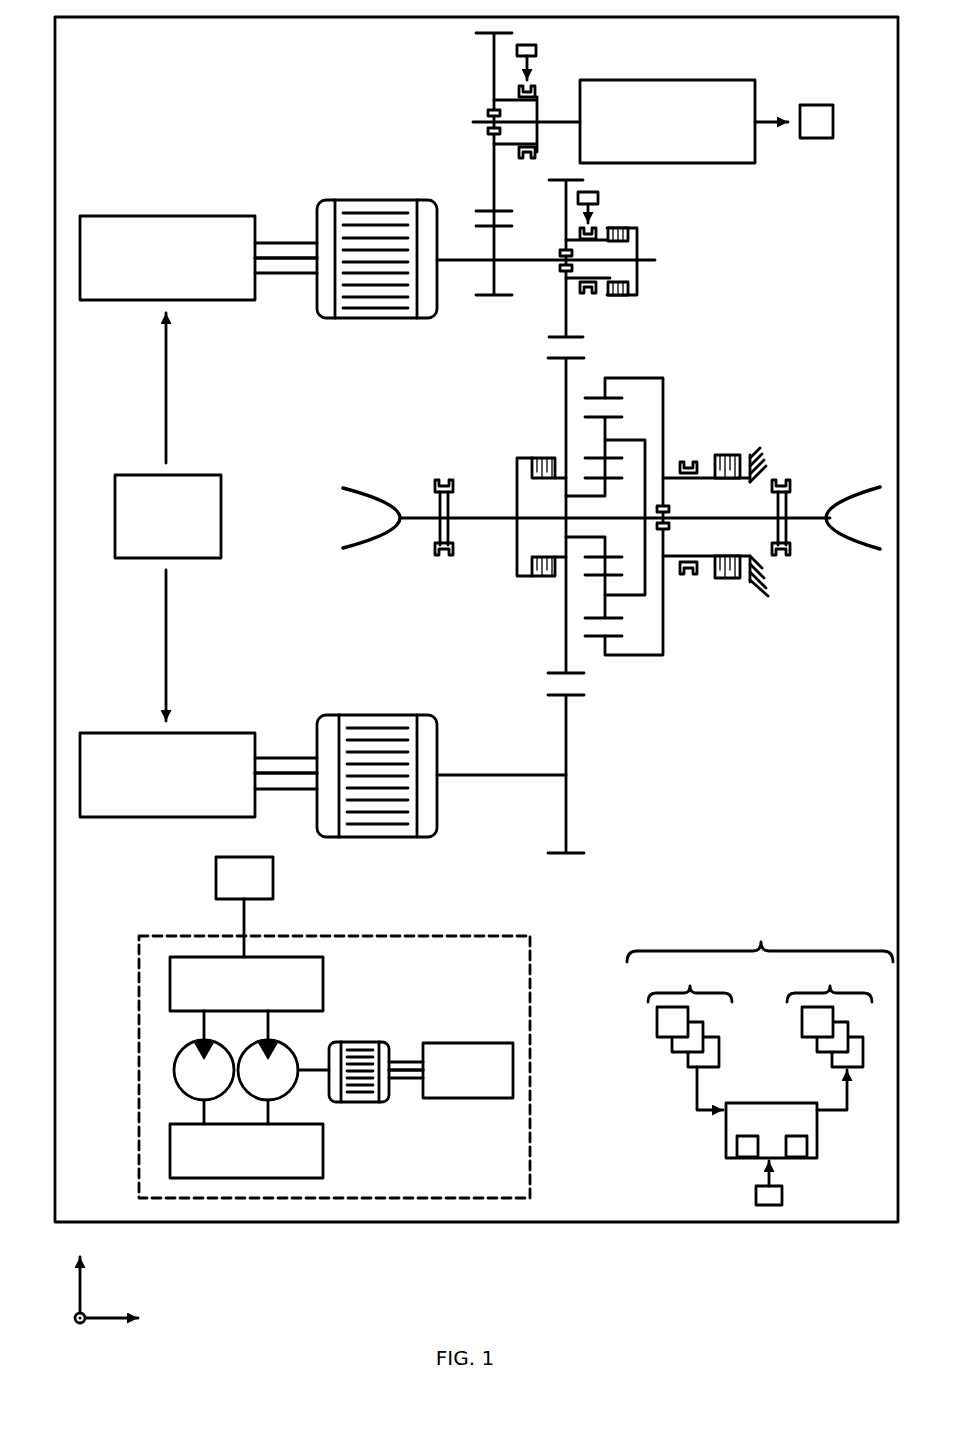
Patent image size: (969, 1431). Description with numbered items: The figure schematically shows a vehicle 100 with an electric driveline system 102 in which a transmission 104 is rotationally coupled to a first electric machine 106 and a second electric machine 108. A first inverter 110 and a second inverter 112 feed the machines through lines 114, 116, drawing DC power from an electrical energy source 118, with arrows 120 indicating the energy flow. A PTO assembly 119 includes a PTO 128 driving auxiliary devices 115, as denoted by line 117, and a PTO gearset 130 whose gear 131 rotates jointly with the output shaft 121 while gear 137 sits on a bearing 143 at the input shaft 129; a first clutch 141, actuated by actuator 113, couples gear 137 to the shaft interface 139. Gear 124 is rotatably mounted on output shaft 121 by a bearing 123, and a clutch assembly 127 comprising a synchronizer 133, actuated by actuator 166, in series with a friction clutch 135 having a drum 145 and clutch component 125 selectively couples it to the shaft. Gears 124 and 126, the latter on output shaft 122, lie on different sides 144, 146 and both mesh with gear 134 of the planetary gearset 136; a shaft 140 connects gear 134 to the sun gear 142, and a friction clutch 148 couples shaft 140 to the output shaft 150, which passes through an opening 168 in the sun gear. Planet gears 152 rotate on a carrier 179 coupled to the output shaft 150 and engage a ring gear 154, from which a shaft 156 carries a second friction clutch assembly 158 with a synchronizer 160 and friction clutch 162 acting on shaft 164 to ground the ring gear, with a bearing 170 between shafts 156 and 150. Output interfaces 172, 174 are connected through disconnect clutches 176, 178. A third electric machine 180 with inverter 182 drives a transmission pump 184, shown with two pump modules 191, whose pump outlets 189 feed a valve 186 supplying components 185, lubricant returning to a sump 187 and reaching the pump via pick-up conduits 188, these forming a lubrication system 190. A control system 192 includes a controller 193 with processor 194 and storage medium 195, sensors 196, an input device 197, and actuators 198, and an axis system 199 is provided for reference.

The vehicle 100 is at (72, 17).
The electric driveline system 102 is at (138, 110).
The transmission 104 is at (846, 186).
The first electric machine 106 is at (347, 200).
The second electric machine 108 is at (350, 715).
The first inverter 110 is at (88, 216).
The second inverter 112 is at (88, 733).
The actuator 113 is at (536, 44).
The line 114 is at (289, 222).
The auxiliary devices 115 is at (817, 105).
The line 116 is at (289, 740).
The line 117 is at (772, 120).
The electrical energy source 118 is at (115, 520).
The PTO assembly 119 is at (352, 70).
The arrows 120 is at (170, 355).
The output shaft 121 is at (466, 258).
The output shaft 122 is at (501, 772).
The bearing 123 is at (560, 254).
The gear 124 is at (560, 316).
The clutch component 125 is at (618, 280).
The gear 126 is at (567, 828).
The clutch assembly 127 is at (639, 219).
The PTO 128 is at (710, 80).
The input shaft 129 is at (547, 153).
The PTO gearset 130 is at (420, 100).
The gear 131 is at (494, 305).
The synchronizer 133 is at (600, 300).
The gear 134 is at (560, 396).
The friction clutch 135 is at (646, 238).
The planetary gearset 136 is at (770, 362).
The gear 137 is at (494, 80).
The shaft interface 139 is at (537, 110).
The shaft 140 is at (582, 497).
The first clutch 141 is at (527, 166).
The sun gear 142 is at (620, 557).
The bearing 143 is at (488, 112).
The first side 144 is at (848, 300).
The drum 145 is at (640, 290).
The second side 146 is at (850, 740).
The friction clutch 148 is at (530, 455).
The output shaft 150 is at (493, 516).
The planet gears 152 is at (605, 605).
The ring gear 154 is at (606, 660).
The shaft 156 is at (663, 650).
The second friction clutch assembly 158 is at (717, 392).
The synchronizer 160 is at (690, 455).
The friction clutch 162 is at (734, 452).
The shaft 164 is at (713, 556).
The actuator 166 is at (598, 196).
The opening 168 is at (562, 526).
The bearing 170 is at (672, 508).
The output interface 172 is at (360, 480).
The output interface 174 is at (870, 482).
The disconnect clutch 176 is at (443, 476).
The disconnect clutch 178 is at (785, 478).
The carrier 179 is at (638, 596).
The third electric machine 180 is at (359, 1042).
The inverter 182 is at (430, 1043).
The transmission pump 184 is at (160, 1068).
The components 185 is at (273, 878).
The valve 186 is at (323, 985).
The sump 187 is at (323, 1170).
The pick-up conduits 188 is at (270, 1106).
The pump outlets 189 is at (202, 1027).
The lubrication system 190 is at (148, 936).
The pump modules 191 is at (296, 1055).
The control system 192 is at (760, 939).
The controller 193 is at (756, 1133).
The processor 194 is at (737, 1148).
The electronic storage medium 195 is at (807, 1147).
The sensors 196 is at (690, 1035).
The input device 197 is at (782, 1195).
The actuators 198 is at (829, 1035).
The axis system 199 is at (108, 1296).